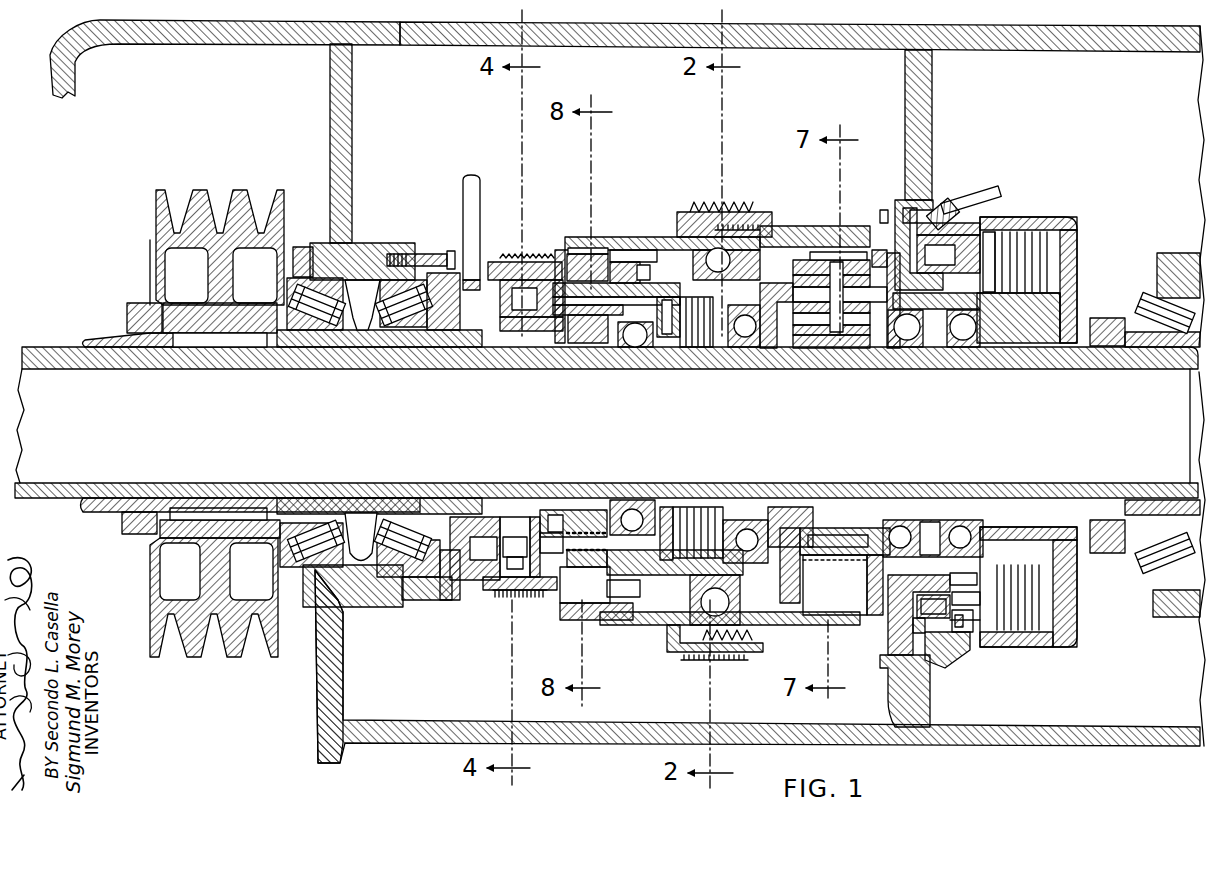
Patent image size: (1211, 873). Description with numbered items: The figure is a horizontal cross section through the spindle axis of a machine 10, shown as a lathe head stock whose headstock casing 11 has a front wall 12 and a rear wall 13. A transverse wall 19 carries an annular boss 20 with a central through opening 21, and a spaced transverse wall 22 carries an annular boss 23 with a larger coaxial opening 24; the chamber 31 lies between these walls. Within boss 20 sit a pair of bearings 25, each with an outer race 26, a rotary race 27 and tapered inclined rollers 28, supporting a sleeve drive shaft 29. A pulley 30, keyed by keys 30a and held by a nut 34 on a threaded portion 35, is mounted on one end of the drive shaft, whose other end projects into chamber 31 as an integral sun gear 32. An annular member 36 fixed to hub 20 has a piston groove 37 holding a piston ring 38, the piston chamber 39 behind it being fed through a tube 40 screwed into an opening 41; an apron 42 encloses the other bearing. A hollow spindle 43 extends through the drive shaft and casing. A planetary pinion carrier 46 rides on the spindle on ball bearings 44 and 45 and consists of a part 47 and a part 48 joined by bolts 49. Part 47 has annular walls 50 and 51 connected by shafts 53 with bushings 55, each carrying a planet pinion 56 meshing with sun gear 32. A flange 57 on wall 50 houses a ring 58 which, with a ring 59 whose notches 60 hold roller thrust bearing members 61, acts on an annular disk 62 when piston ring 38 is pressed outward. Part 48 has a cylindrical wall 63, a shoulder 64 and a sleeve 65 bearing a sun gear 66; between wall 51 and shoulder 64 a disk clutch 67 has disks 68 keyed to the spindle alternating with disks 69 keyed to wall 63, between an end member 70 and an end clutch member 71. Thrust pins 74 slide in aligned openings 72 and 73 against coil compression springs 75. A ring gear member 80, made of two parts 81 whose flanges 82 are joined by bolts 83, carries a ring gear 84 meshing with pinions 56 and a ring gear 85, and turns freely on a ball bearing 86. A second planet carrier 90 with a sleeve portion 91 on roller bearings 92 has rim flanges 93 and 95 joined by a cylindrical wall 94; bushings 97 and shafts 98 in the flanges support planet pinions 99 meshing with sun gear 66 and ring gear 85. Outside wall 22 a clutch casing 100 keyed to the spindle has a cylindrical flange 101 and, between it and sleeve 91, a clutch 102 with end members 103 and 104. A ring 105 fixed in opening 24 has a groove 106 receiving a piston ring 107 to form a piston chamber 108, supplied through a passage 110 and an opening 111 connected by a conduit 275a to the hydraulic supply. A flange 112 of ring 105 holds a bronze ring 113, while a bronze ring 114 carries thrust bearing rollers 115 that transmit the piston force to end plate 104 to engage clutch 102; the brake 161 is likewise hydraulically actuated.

The machine 10 is at (64, 42).
The headstock casing 11 is at (310, 706).
The front wall 12 is at (1118, 735).
The rear wall 13 is at (1096, 52).
The transverse wall 19 is at (332, 78).
The annular boss 20 is at (372, 245).
The central annular through opening 21 is at (357, 607).
The transverse wall 22 is at (925, 76).
The annular boss 23 is at (915, 210).
The central opening 24 is at (888, 665).
The bearings 25 is at (360, 335).
The outer race 26 is at (322, 582).
The rotary race 27 is at (290, 330).
The tapered inclined rollers 28 is at (315, 318).
The sleeve drive shaft 29 is at (90, 333).
The pulley 30 is at (152, 210).
The keys 30a is at (198, 337).
The chamber 31 is at (640, 107).
The sun gear 32 is at (558, 305).
The nut 34 is at (108, 300).
The threaded portion 35 is at (110, 368).
The annular member 36 is at (455, 600).
The annular piston groove 37 is at (478, 560).
The annular piston ring 38 is at (484, 260).
The annular piston chamber 39 is at (455, 517).
The tube 40 is at (462, 215).
The opening 41 is at (466, 275).
The apron 42 is at (302, 245).
The hollow spindle 43 is at (50, 482).
The ball bearing 44 is at (636, 347).
The ball bearing 45 is at (745, 340).
The planetary pinion carrier 46 is at (660, 215).
The carrier part 47 is at (614, 602).
The carrier part 48 is at (670, 582).
The bolts 49 is at (618, 262).
The annular wall 50 is at (553, 330).
The annular wall 51 is at (600, 570).
The shafts 53 is at (603, 315).
The bushings 55 is at (566, 283).
The planet pinion 56 is at (592, 300).
The annular flange 57 is at (505, 600).
The annular ring 58 is at (520, 285).
The annular ring 59 is at (515, 340).
The notches 60 is at (510, 540).
The roller thrust bearing member 61 is at (518, 537).
The annular disk 62 is at (537, 555).
The annular cylindrical wall 63 is at (655, 578).
The annular shoulder 64 is at (785, 520).
The cylindrical sleeve 65 is at (810, 528).
The sun gear 66 is at (845, 535).
The disk clutch 67 is at (662, 528).
The disks 68 is at (684, 540).
The disks 69 is at (722, 545).
The end member 70 is at (748, 528).
The end clutch member 71 is at (660, 538).
The through openings 72 is at (598, 535).
The openings 73 is at (550, 555).
The thrust pin 74 is at (576, 533).
The coil compression spring 75 is at (582, 550).
The ring gear member 80 is at (782, 215).
The parts 81 is at (684, 190).
The contacting flanges 82 is at (700, 212).
The bolts 83 is at (720, 200).
The ring gear 84 is at (572, 253).
The ring gear 85 is at (880, 250).
The ball bearing 86 is at (760, 262).
The second planet carrier 90 is at (1085, 295).
The cylindrical sleeve portion 91 is at (1005, 575).
The roller bearings 92 is at (902, 525).
The annular rim flange 93 is at (875, 615).
The cylindrical wall 94 is at (835, 585).
The second annular rim flange 95 is at (783, 585).
The bushings 97 is at (798, 350).
The shaft 98 is at (850, 275).
The planet pinion 99 is at (820, 260).
The clutch casing 100 is at (1070, 225).
The cylindrical flange 101 is at (1022, 248).
The clutch 102 is at (1050, 245).
The end member 103 is at (1078, 250).
The end member 104 is at (985, 235).
The ring 105 is at (962, 650).
The annular groove 106 is at (922, 633).
The piston ring 107 is at (940, 620).
The piston chamber 108 is at (905, 585).
The passage 110 is at (903, 240).
The opening 111 is at (946, 212).
The annular flange 112 is at (972, 657).
The bronze ring 113 is at (973, 618).
The bronze ring 114 is at (978, 582).
The thrust bearing rollers 115 is at (980, 598).
The brake 161 is at (752, 200).
The conduit 275a is at (980, 192).